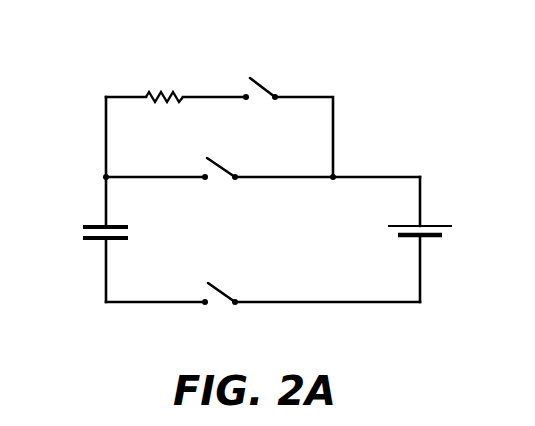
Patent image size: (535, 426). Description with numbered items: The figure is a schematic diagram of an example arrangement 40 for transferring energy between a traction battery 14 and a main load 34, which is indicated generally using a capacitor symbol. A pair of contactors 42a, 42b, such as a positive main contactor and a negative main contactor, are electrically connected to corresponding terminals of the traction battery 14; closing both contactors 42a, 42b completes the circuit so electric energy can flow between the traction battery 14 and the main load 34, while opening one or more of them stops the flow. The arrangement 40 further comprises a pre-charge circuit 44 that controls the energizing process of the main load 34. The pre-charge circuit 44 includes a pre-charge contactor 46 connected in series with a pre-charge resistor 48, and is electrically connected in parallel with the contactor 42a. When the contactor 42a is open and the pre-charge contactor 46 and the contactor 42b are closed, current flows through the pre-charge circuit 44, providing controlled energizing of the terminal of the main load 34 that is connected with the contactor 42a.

The traction battery 14 is at (435, 224).
The main load 34 is at (113, 225).
The arrangement 40 is at (411, 123).
The contactor 42a is at (220, 163).
The contactor 42b is at (221, 289).
The pre-charge circuit 44 is at (100, 42).
The pre-charge contactor 46 is at (274, 94).
The pre-charge resistor 48 is at (185, 96).